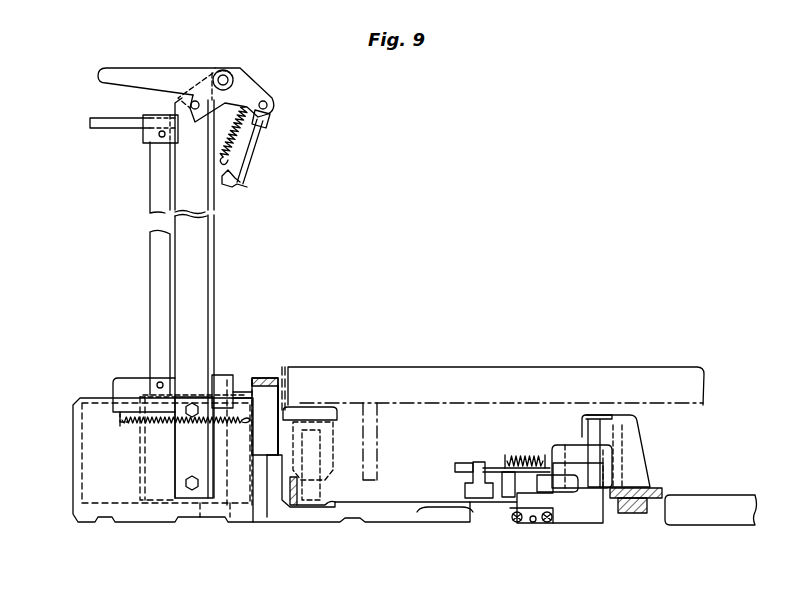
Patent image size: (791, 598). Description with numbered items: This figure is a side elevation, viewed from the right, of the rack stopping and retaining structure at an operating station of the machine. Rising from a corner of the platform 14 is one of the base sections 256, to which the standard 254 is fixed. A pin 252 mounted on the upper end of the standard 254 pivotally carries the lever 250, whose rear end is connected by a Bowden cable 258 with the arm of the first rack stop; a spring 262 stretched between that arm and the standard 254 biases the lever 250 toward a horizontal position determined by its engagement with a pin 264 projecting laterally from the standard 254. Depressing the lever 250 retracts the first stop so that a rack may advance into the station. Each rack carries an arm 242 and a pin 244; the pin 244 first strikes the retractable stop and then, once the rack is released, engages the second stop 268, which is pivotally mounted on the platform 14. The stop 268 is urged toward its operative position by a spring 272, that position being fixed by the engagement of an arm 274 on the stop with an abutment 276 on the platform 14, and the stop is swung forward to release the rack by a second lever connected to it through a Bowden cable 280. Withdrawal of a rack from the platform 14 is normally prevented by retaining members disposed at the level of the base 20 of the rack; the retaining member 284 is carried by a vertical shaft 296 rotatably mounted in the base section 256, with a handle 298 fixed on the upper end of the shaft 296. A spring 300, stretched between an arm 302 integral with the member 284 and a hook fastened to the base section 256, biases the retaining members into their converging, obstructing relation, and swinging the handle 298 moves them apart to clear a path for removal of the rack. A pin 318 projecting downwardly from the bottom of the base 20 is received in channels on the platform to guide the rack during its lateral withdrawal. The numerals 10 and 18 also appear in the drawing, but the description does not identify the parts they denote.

The lever 250 is at (113, 68).
The pin 252 is at (227, 73).
The pin 264 is at (190, 98).
The Bowden cable 258 is at (257, 138).
The spring 262 is at (233, 143).
The standard 254 is at (200, 273).
The vertical shaft 296 is at (150, 280).
The handle 298 is at (88, 127).
The arm 302 is at (113, 382).
The spring 300 is at (135, 425).
The base section 256 is at (73, 480).
The retaining member 284 is at (245, 377).
The base 20 is at (323, 367).
The pin 318 is at (377, 430).
The cutter block 10 is at (305, 507).
The platform 14 is at (375, 513).
The Bowden cable 280 is at (492, 463).
The spring 272 is at (523, 455).
The arm 274 is at (563, 483).
The abutment 276 is at (543, 493).
The second stop 268 is at (612, 455).
The arm 242 is at (623, 418).
The pin 244 is at (590, 447).
The rail 18 is at (660, 493).